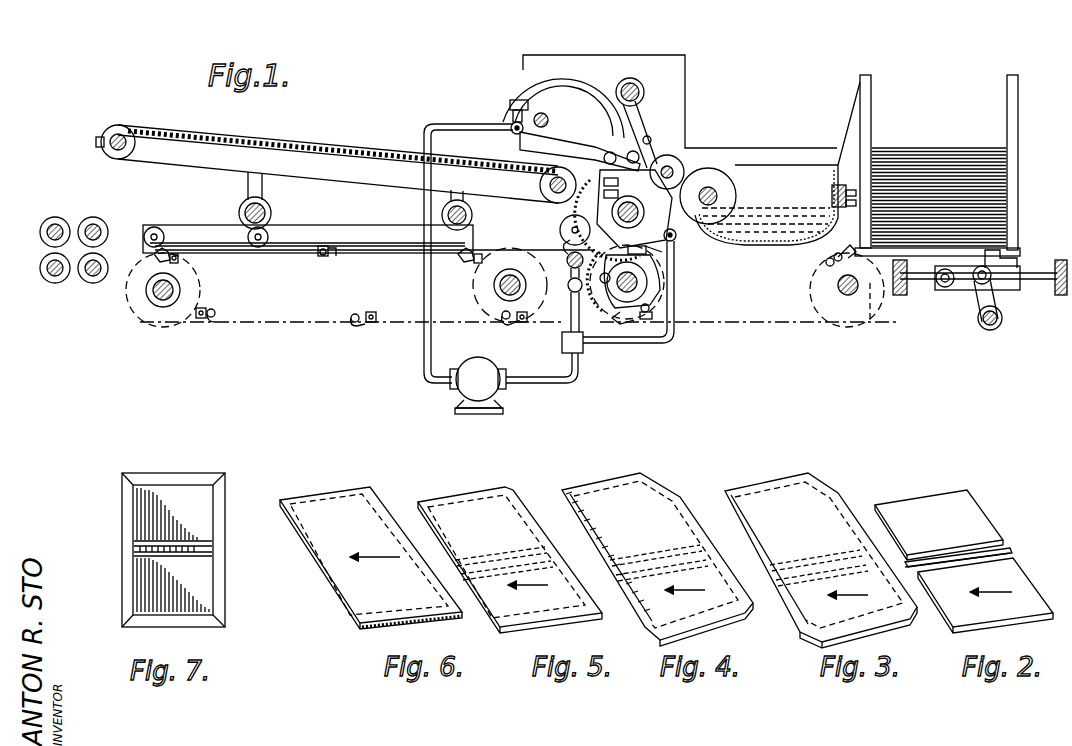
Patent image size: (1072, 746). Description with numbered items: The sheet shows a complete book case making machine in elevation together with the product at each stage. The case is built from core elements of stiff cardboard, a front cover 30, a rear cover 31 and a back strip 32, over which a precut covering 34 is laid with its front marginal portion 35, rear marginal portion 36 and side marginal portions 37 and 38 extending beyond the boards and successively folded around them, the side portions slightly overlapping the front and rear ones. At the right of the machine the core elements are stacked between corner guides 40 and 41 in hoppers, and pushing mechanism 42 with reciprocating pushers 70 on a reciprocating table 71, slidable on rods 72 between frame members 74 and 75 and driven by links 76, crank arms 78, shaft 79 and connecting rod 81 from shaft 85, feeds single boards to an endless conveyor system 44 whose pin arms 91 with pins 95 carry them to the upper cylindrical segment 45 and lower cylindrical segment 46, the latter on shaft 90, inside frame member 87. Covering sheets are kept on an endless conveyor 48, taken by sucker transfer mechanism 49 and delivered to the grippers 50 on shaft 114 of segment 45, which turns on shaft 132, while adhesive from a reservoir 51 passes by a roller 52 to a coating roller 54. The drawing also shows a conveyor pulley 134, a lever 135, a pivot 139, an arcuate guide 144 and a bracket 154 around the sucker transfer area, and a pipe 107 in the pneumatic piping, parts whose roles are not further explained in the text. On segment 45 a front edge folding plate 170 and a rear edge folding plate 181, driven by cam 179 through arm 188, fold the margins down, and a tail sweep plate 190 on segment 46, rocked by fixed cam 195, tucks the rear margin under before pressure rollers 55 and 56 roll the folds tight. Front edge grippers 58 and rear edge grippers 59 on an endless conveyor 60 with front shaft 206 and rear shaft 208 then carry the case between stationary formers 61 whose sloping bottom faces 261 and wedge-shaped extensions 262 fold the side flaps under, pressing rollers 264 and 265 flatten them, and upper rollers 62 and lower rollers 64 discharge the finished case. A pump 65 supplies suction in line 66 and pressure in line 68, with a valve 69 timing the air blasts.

In FIG. 1, the front cover 30 is at (946, 150).
In FIG. 7, the front cover 30 is at (148, 593).
In FIG. 4, the front cover 30 is at (712, 572).
In FIG. 2, the front cover 30 is at (1030, 586).
In FIG. 7, the rear cover 31 is at (150, 508).
In FIG. 4, the rear cover 31 is at (618, 488).
In FIG. 2, the rear cover 31 is at (972, 504).
In FIG. 7, the back strip 32 is at (138, 549).
In FIG. 5, the back strip 32 is at (504, 563).
In FIG. 4, the back strip 32 is at (662, 546).
In FIG. 3, the back strip 32 is at (819, 568).
In FIG. 2, the back strip 32 is at (1012, 550).
In FIG. 1, the covering 34 is at (362, 146).
In FIG. 6, the covering 34 is at (343, 488).
In FIG. 5, the covering 34 is at (500, 490).
In FIG. 4, the covering 34 is at (656, 486).
In FIG. 3, the covering 34 is at (836, 506).
In FIG. 7, the front marginal portion 35 is at (220, 524).
In FIG. 6, the front marginal portion 35 is at (318, 548).
In FIG. 5, the front marginal portion 35 is at (466, 530).
In FIG. 4, the front marginal portion 35 is at (622, 620).
In FIG. 3, the front marginal portion 35 is at (796, 628).
In FIG. 7, the rear marginal portion 36 is at (126, 536).
In FIG. 6, the rear marginal portion 36 is at (381, 502).
In FIG. 5, the rear marginal portion 36 is at (522, 498).
In FIG. 4, the rear marginal portion 36 is at (680, 494).
In FIG. 3, the rear marginal portion 36 is at (880, 498).
In FIG. 7, the side marginal portion 37 is at (174, 480).
In FIG. 6, the side marginal portion 37 is at (312, 494).
In FIG. 5, the side marginal portion 37 is at (458, 492).
In FIG. 4, the side marginal portion 37 is at (590, 486).
In FIG. 3, the side marginal portion 37 is at (768, 490).
In FIG. 7, the side marginal portion 38 is at (136, 622).
In FIG. 6, the side marginal portion 38 is at (406, 606).
In FIG. 5, the side marginal portion 38 is at (512, 634).
In FIG. 4, the side marginal portion 38 is at (698, 632).
In FIG. 3, the side marginal portion 38 is at (898, 626).
In FIG. 1, the corner guide 40 is at (873, 96).
In FIG. 1, the corner guide 41 is at (1007, 88).
In FIG. 1, the pushing mechanism 42 is at (964, 315).
In FIG. 1, the endless conveyor system 44 is at (808, 326).
In FIG. 1, the upper cylindrical segment 45 is at (592, 204).
In FIG. 1, the lower cylindrical segment 46 is at (591, 318).
In FIG. 1, the endless conveyor 48 is at (237, 146).
In FIG. 1, the sucker transfer mechanism 49 is at (624, 140).
In FIG. 1, the grippers 50 is at (670, 157).
In FIG. 1, the reservoir 51 is at (776, 170).
In FIG. 1, the roller 52 is at (730, 172).
In FIG. 1, the coating roller 54 is at (690, 165).
In FIG. 1, the pressure roller 55 is at (571, 230).
In FIG. 1, the pressure roller 56 is at (548, 270).
In FIG. 1, the front edge grippers 58 is at (172, 246).
In FIG. 1, the rear edge grippers 59 is at (331, 244).
In FIG. 1, the endless conveyor 60 is at (326, 326).
In FIG. 1, the stationary formers 61 is at (296, 226).
In FIG. 1, the upper rollers 62 is at (93, 217).
In FIG. 1, the lower rollers 64 is at (92, 283).
In FIG. 1, the pump 65 is at (512, 354).
In FIG. 1, the line 66 is at (424, 352).
In FIG. 1, the line 68 is at (568, 298).
In FIG. 1, the valve 69 is at (562, 342).
In FIG. 1, the reciprocating pushers 70 is at (994, 262).
In FIG. 1, the reciprocating table 71 is at (1012, 282).
In FIG. 1, the rods 72 is at (1032, 272).
In FIG. 1, the frame member 74 is at (895, 292).
In FIG. 1, the frame member 75 is at (1060, 297).
In FIG. 1, the links 76 is at (946, 290).
In FIG. 1, the crank arms 78 is at (982, 286).
In FIG. 1, the shaft 79 is at (990, 330).
In FIG. 1, the connecting rod 81 is at (877, 319).
In FIG. 1, the shaft 85 is at (838, 288).
In FIG. 1, the frame member 87 is at (672, 92).
In FIG. 1, the shaft 90 is at (640, 284).
In FIG. 1, the pin arms 91 is at (656, 313).
In FIG. 1, the pins 95 is at (627, 320).
In FIG. 1, the pipe 107 is at (677, 242).
In FIG. 1, the rotatable shaft 114 is at (707, 188).
In FIG. 1, the rotating shaft 132 is at (645, 210).
In FIG. 1, the pulley 134 is at (542, 181).
In FIG. 1, the lever 135 is at (594, 146).
In FIG. 1, the pivot 139 is at (640, 90).
In FIG. 1, the arc guide 144 is at (553, 66).
In FIG. 1, the bracket 154 is at (510, 102).
In FIG. 1, the front edge folding plate 170 is at (600, 175).
In FIG. 1, the stationary cam 179 is at (600, 191).
In FIG. 1, the rear edge folding plate 181 is at (580, 235).
In FIG. 1, the arm 188 is at (549, 288).
In FIG. 1, the tail sweep plate 190 is at (645, 250).
In FIG. 1, the fixed cam 195 is at (674, 289).
In FIG. 1, the front shaft 206 is at (156, 300).
In FIG. 1, the rear shaft 208 is at (494, 288).
In FIG. 1, the bottom faces 261 is at (283, 252).
In FIG. 1, the extensions 262 is at (246, 254).
In FIG. 1, the pressing roller 264 is at (261, 254).
In FIG. 1, the pressing roller 265 is at (156, 227).